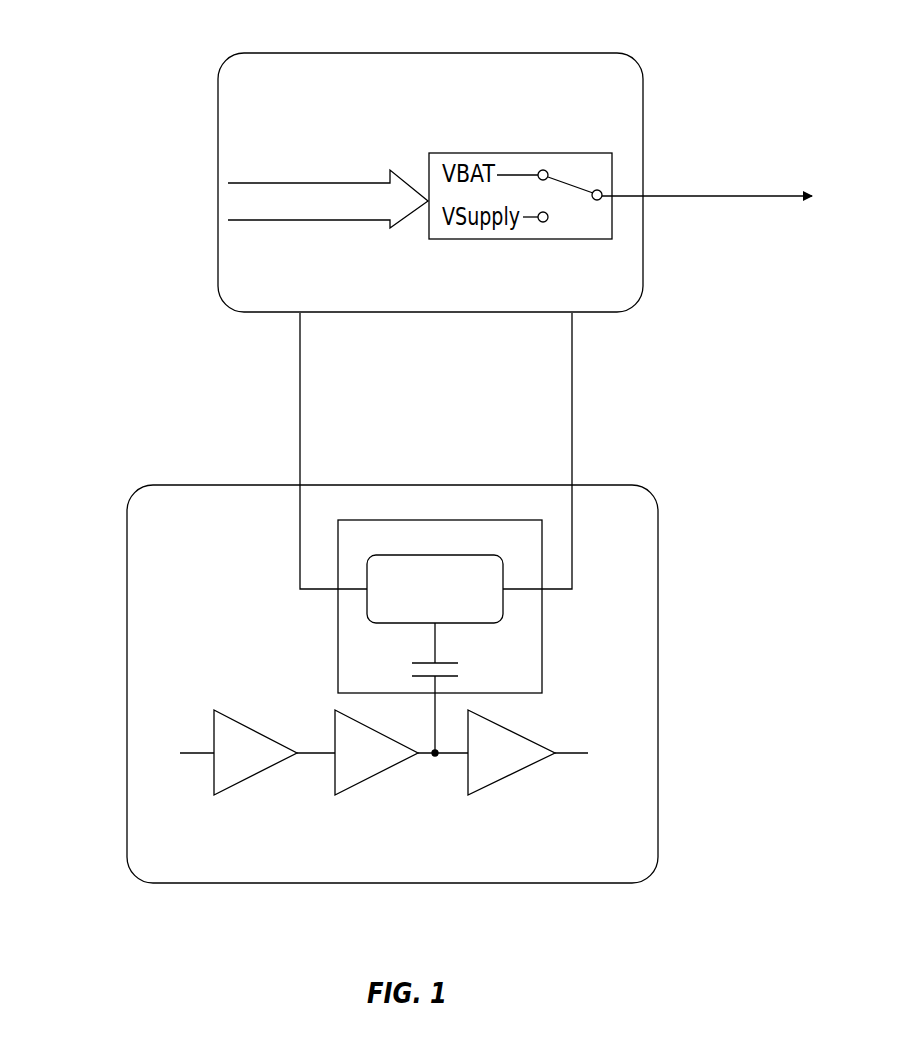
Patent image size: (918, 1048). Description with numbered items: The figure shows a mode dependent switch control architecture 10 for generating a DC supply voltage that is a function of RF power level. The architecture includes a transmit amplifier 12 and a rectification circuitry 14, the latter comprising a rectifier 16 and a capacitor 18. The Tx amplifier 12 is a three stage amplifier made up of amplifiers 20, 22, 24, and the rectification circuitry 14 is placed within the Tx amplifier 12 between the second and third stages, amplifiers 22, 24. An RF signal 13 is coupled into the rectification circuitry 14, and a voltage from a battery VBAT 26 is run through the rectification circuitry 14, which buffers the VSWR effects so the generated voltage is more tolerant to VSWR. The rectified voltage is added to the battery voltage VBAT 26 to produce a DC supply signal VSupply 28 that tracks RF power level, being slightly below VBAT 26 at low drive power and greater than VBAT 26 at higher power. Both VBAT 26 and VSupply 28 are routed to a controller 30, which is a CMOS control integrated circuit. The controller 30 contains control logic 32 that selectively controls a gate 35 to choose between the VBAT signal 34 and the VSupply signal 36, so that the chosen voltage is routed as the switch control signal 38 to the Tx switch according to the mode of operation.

The mode dependent switch control architecture 10 is at (96, 141).
The transmit amplifier 12 is at (111, 570).
The RF signal 13 is at (188, 755).
The rectification circuitry 14 is at (542, 624).
The rectifier 16 is at (435, 589).
The capacitor 18 is at (458, 670).
The amplifier 20 is at (248, 777).
The amplifier 22 is at (368, 777).
The amplifier 24 is at (517, 777).
The battery voltage VBAT 26 is at (300, 418).
The DC supply signal VSupply 28 is at (572, 402).
The controller 30 is at (641, 128).
The control logic 32 is at (346, 220).
The VBAT signal 34 is at (517, 175).
The gate 35 is at (573, 192).
The VSupply signal 36 is at (530, 218).
The switch control signal 38 is at (743, 197).